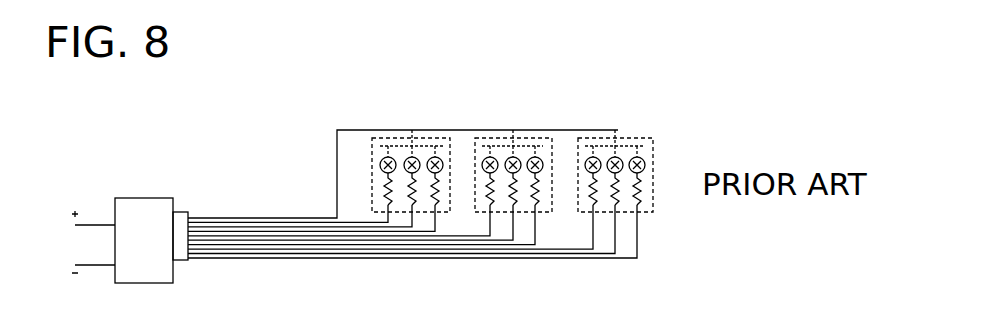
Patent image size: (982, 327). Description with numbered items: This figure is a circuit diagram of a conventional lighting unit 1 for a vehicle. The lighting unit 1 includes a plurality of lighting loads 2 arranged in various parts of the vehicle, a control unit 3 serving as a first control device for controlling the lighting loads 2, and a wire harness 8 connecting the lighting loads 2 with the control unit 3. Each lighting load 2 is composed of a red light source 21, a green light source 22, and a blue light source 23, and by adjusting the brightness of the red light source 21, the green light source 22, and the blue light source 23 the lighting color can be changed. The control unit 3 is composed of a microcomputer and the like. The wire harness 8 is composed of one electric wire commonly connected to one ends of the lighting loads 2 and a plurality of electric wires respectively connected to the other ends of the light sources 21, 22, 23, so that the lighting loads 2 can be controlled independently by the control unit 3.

The lighting unit 1 is at (296, 137).
The lighting load 2 is at (401, 136).
The control unit 3 is at (138, 198).
The wire harness 8 is at (268, 258).
The red light source 21 is at (381, 152).
The green light source 22 is at (414, 146).
The blue light source 23 is at (442, 150).